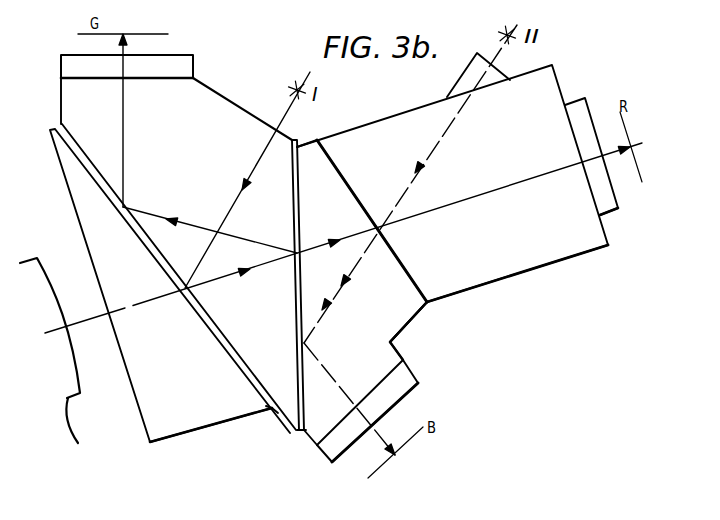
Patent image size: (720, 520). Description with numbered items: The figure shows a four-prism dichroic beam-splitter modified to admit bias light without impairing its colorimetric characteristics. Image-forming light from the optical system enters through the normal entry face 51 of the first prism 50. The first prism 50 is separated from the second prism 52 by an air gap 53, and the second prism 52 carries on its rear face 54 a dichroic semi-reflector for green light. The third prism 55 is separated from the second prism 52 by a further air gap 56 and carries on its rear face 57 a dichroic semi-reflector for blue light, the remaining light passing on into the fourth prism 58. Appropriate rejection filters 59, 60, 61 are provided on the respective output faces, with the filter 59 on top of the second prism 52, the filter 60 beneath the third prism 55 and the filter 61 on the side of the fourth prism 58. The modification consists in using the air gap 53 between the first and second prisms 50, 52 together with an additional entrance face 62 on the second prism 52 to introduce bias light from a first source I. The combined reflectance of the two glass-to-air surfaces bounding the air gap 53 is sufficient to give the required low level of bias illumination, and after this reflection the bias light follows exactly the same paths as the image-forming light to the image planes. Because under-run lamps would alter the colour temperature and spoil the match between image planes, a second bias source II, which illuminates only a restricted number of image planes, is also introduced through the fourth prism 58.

The first prism 50 is at (194, 416).
The normal entry face 51 is at (137, 406).
The second prism 52 is at (188, 129).
The air gap 53 is at (271, 410).
The rear face of second prism 54 is at (297, 315).
The third prism 55 is at (364, 336).
The air gap 56 is at (302, 433).
The rear face of third prism 57 is at (413, 290).
The fourth prism 58 is at (501, 250).
The rejection filter 59 is at (174, 62).
The rejection filter 60 is at (410, 386).
The rejection filter 61 is at (608, 209).
The additional entrance face 62 is at (239, 107).